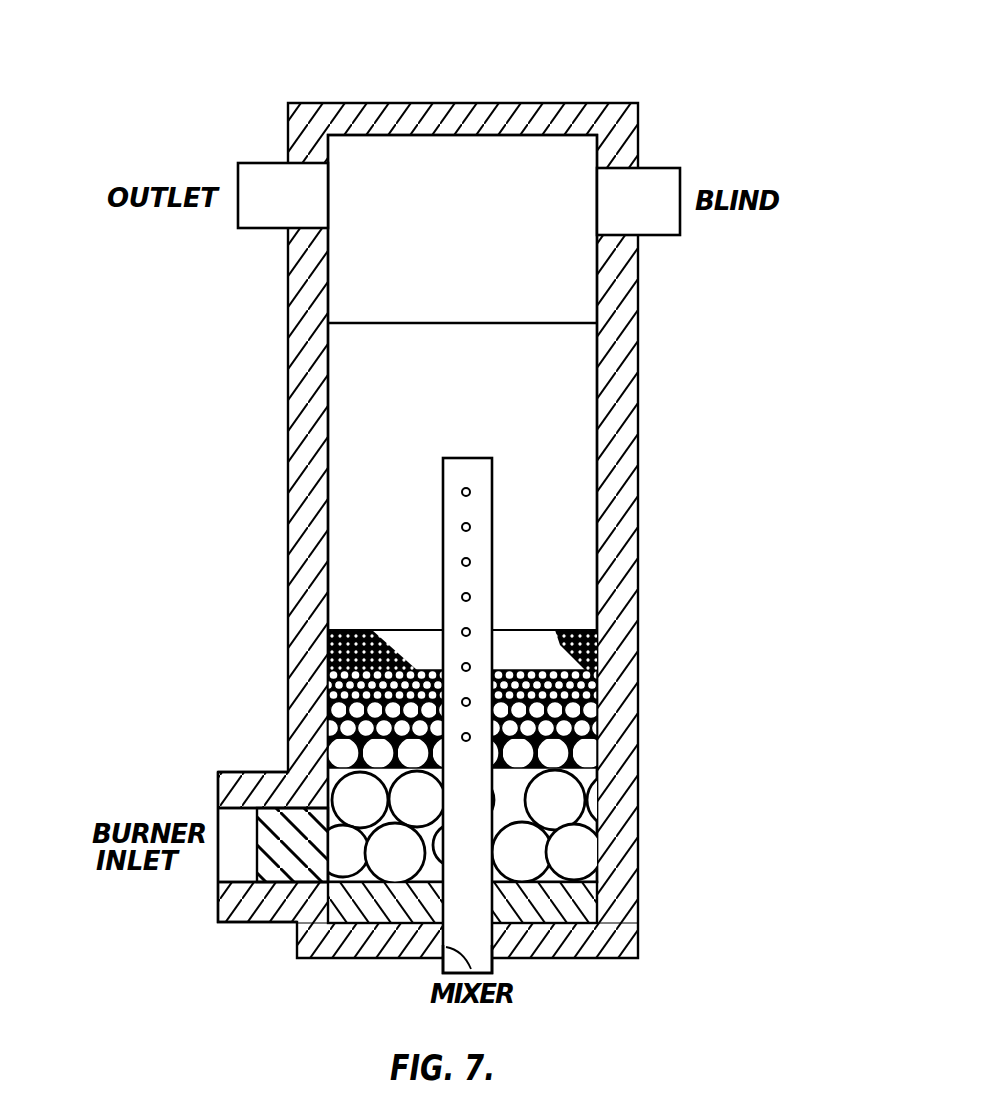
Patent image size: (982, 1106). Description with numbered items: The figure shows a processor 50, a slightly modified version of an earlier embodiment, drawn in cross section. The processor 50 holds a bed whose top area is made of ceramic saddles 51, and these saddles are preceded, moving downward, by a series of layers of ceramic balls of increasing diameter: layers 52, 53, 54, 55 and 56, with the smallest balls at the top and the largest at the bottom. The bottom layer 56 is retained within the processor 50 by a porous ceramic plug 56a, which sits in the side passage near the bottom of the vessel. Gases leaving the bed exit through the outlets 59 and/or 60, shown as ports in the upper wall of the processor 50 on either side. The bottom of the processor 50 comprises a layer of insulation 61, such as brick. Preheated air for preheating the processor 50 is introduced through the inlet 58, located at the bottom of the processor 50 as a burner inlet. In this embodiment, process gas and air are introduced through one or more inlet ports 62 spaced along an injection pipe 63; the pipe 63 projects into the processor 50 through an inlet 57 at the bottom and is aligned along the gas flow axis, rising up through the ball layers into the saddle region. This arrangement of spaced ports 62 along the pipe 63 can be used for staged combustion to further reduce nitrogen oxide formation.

The processor 50 is at (492, 56).
The ceramic saddles 51 is at (472, 403).
The layer of ceramic balls 52 is at (585, 655).
The layer of ceramic balls 53 is at (585, 690).
The layer of ceramic balls 54 is at (585, 722).
The layer of ceramic balls 55 is at (575, 755).
The bottom layer of ceramic balls 56 is at (570, 813).
The porous ceramic plug 56a is at (288, 866).
The inlet 57 is at (432, 955).
The inlet 58 is at (265, 806).
The outlet 59 is at (258, 163).
The outlet 60 is at (655, 168).
The layer of insulation 61 is at (565, 950).
The inlet ports 62 is at (471, 492).
The injection pipe 63 is at (442, 553).